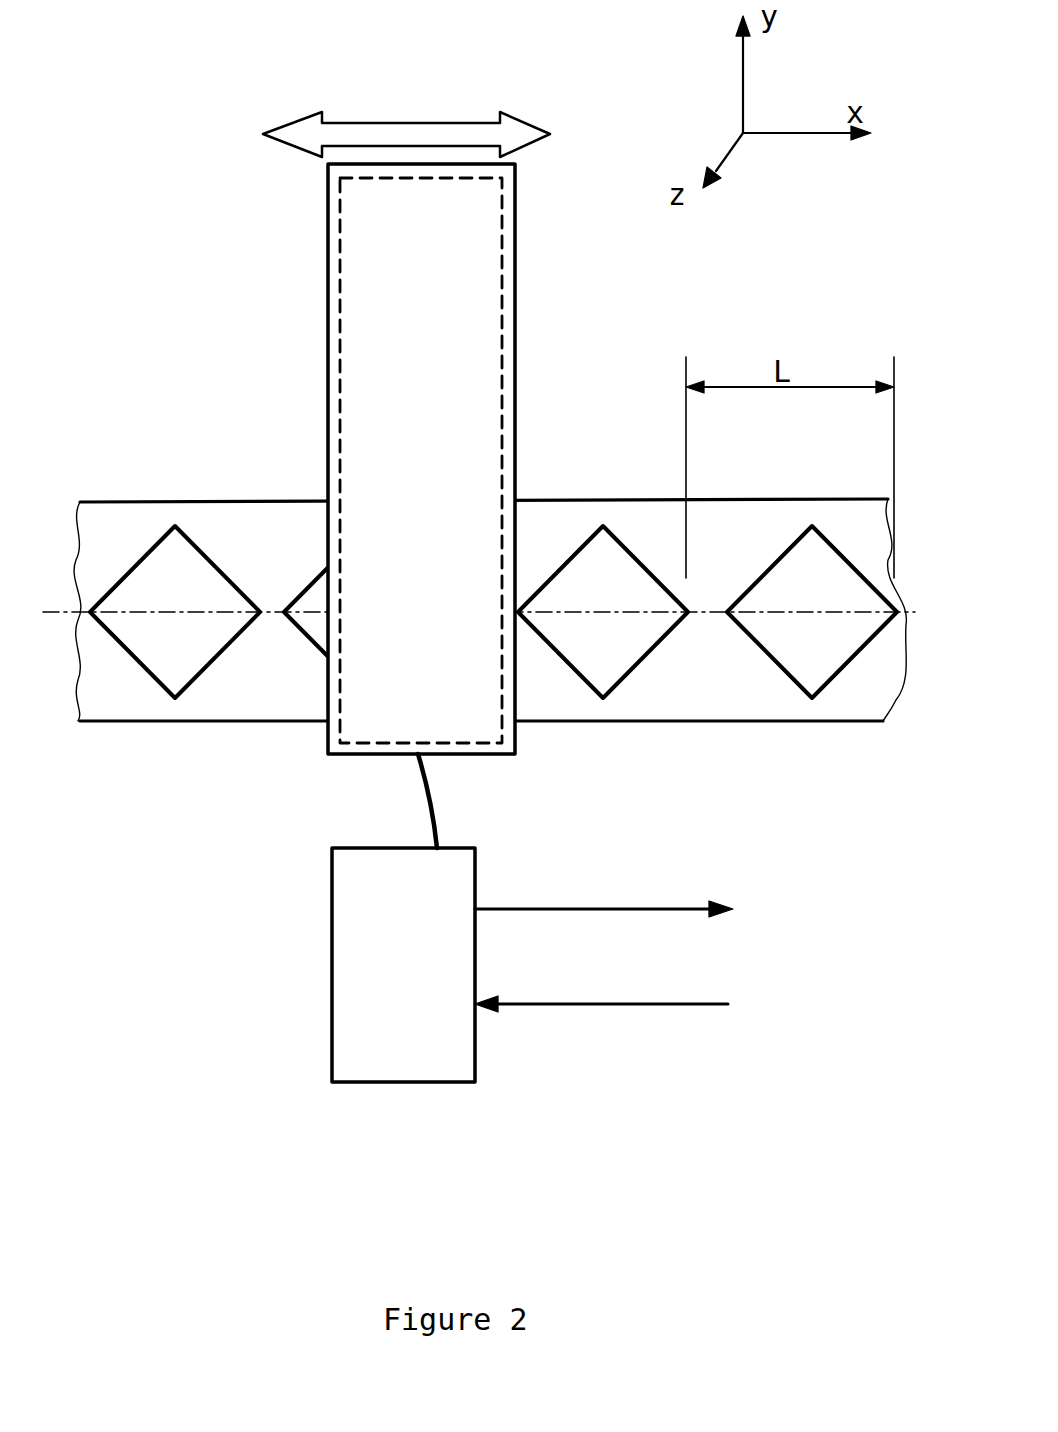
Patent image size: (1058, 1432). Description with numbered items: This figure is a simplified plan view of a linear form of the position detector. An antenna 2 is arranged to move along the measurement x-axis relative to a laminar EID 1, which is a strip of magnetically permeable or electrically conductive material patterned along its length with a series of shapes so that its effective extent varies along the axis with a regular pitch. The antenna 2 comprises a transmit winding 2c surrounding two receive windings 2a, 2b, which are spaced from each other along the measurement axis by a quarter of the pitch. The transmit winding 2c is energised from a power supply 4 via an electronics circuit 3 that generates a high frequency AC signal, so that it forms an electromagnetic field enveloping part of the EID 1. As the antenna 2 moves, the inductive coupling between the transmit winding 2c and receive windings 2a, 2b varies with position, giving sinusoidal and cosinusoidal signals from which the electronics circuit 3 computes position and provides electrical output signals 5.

The laminar EID 1 is at (107, 670).
The antenna 2 is at (493, 880).
The first receive winding 2a is at (175, 612).
The second receive winding 2b is at (369, 612).
The transmit winding 2c is at (603, 612).
The electronics circuit 3 is at (418, 1050).
The power supply 4 is at (607, 1013).
The electrical output signals 5 is at (723, 917).